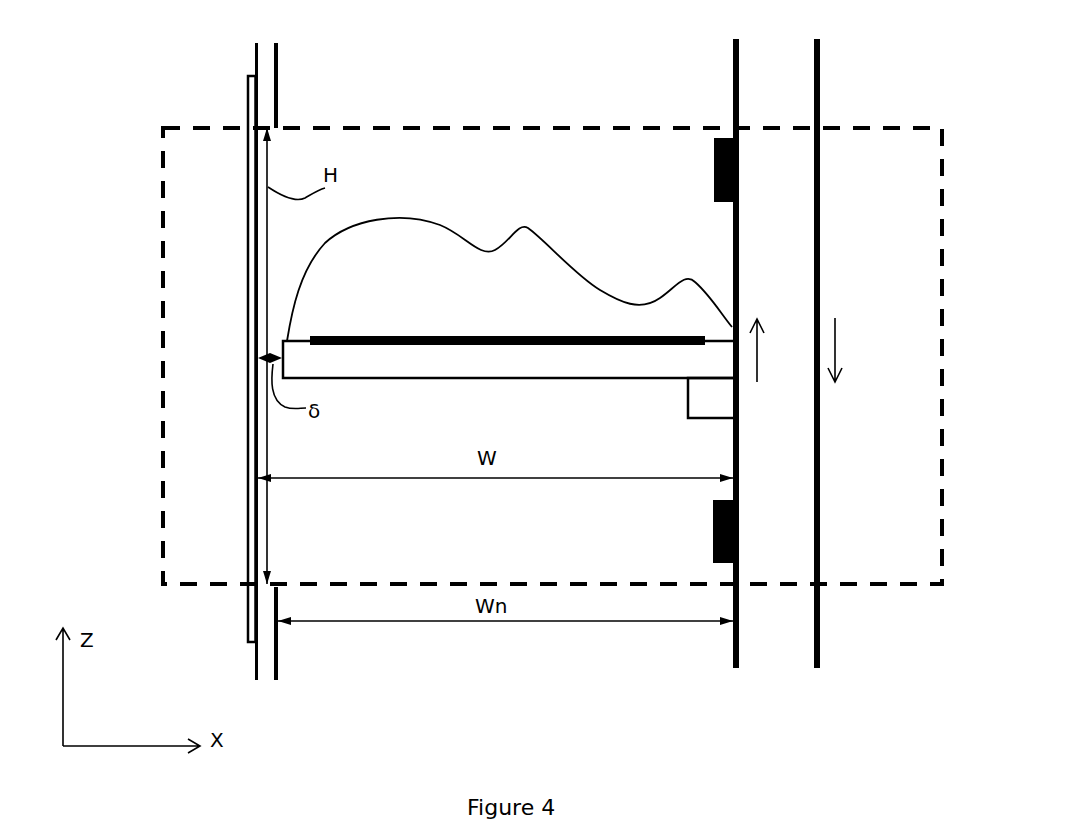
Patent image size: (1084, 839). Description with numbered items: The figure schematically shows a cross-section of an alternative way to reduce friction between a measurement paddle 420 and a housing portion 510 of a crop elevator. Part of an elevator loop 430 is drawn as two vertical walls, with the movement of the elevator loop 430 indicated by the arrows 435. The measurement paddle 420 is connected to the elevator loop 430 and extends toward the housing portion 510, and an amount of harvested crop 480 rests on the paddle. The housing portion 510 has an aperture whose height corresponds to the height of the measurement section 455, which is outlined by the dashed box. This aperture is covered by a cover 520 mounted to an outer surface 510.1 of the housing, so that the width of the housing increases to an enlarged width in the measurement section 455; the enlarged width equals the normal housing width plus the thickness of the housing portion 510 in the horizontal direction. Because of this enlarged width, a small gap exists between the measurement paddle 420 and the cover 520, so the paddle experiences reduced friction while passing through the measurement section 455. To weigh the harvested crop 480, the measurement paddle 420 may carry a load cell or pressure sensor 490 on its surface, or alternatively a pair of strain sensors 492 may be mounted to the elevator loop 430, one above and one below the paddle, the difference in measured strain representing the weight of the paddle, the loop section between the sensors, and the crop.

The housing portion 510 is at (267, 662).
The outer surface of the housing 510.1 is at (256, 62).
The cover 520 is at (247, 142).
The elevator loop 430 is at (820, 93).
The arrows 435 is at (758, 355).
The measurement section 455 is at (425, 128).
The harvested crop 480 is at (536, 262).
The load cell or pressure sensor 490 is at (470, 335).
The strain sensor 492 is at (714, 157).
The measurement paddle 420 is at (368, 357).